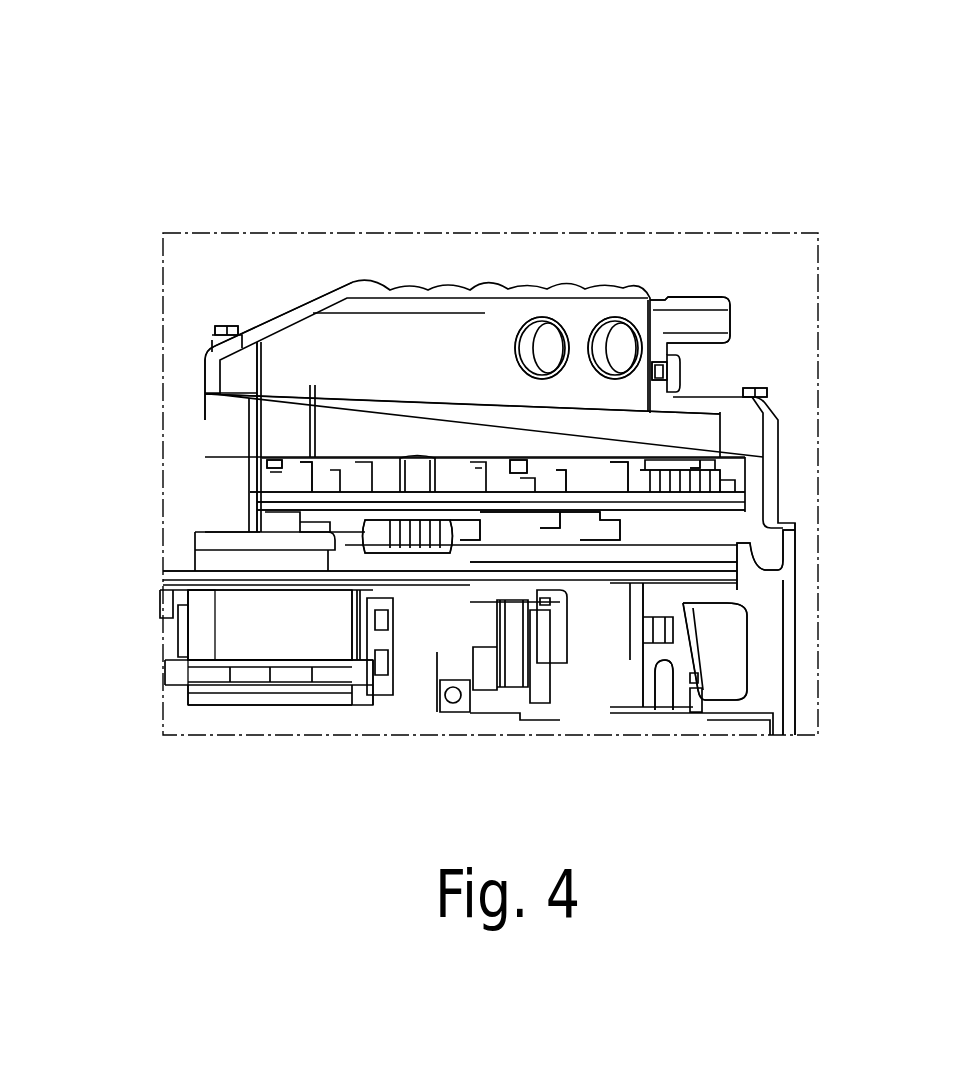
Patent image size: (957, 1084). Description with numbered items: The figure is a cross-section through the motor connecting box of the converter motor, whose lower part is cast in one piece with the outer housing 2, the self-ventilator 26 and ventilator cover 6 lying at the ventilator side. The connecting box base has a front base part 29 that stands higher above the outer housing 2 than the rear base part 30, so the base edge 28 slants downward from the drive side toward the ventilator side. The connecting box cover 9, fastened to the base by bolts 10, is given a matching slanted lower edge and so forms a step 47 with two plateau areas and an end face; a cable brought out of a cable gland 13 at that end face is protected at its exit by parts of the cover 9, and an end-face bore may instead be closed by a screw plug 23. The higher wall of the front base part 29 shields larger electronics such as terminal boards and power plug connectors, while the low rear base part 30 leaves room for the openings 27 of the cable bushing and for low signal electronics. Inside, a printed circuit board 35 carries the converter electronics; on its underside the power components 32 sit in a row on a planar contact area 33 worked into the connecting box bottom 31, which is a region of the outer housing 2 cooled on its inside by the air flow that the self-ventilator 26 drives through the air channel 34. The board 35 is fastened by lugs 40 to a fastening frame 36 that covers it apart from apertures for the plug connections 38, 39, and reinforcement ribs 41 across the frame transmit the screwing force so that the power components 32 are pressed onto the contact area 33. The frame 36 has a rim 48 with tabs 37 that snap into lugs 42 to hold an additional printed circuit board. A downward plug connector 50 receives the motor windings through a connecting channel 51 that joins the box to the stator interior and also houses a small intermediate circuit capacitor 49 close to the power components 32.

The outer housing 2 is at (790, 533).
The ventilator cover 6 is at (790, 548).
The connecting box cover 9 is at (213, 373).
The bolt 10 is at (215, 325).
The cable gland 13 is at (712, 304).
The screw plug 23 is at (680, 377).
The self-ventilator 26 is at (727, 697).
The opening 27 is at (622, 335).
The base edge 28 is at (285, 403).
The front base part 29 is at (228, 507).
The rear base part 30 is at (770, 485).
The connecting box bottom 31 is at (635, 535).
The power component 32 is at (548, 525).
The contact area 33 is at (570, 545).
The air channel 34 is at (512, 472).
The printed circuit board 35 is at (553, 500).
The fastening frame 36 is at (601, 495).
The tab 37 is at (492, 500).
The plug connection 38 is at (424, 525).
The plug connection 39 is at (765, 467).
The lug 40 is at (745, 512).
The reinforcement rib 41 is at (458, 490).
The lug 42 is at (513, 460).
The step 47 is at (670, 273).
The rim 48 is at (313, 477).
The intermediate circuit capacitor 49 is at (335, 540).
The plug connector 50 is at (380, 532).
The connecting channel 51 is at (190, 665).